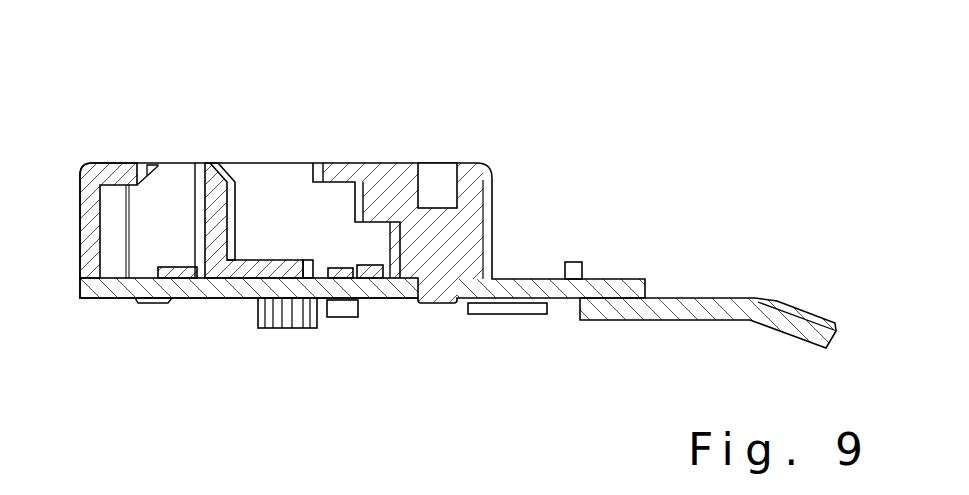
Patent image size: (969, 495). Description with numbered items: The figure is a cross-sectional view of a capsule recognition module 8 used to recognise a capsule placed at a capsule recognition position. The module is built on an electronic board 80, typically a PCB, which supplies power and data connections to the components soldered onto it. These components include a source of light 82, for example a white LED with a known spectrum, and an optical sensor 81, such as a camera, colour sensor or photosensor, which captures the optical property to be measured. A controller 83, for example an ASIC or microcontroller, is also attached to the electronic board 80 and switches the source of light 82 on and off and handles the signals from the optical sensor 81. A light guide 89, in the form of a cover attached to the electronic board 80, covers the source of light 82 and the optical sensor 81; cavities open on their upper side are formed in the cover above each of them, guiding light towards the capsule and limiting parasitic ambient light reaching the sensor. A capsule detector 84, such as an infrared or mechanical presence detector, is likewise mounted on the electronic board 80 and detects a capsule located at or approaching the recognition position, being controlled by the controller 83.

The capsule recognition module 8 is at (568, 141).
The electronic board 80 is at (223, 291).
The optical sensor 81 is at (175, 275).
The source of light 82 is at (335, 275).
The controller 83 is at (520, 310).
The capsule detector 84 is at (372, 275).
The light guide 89 is at (387, 180).